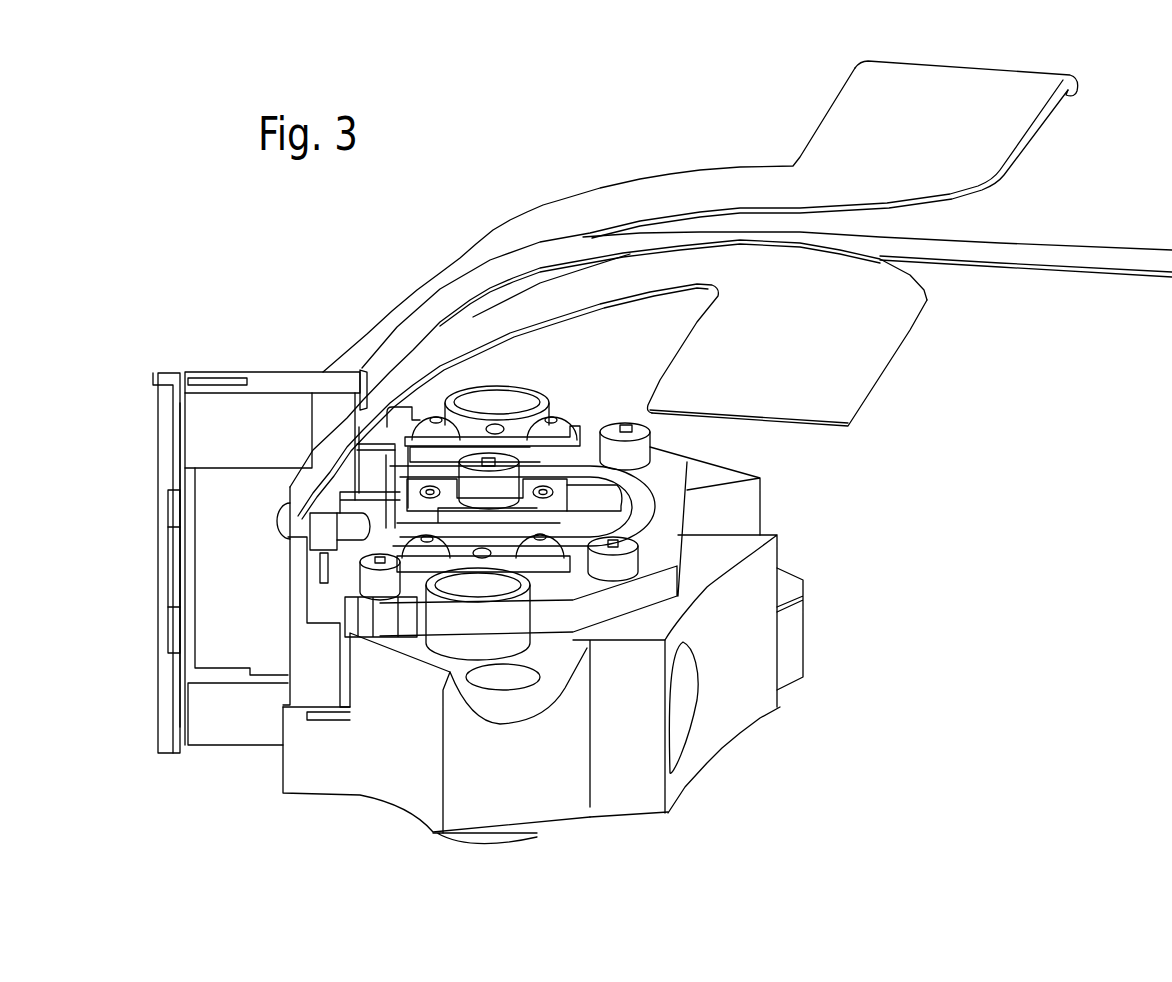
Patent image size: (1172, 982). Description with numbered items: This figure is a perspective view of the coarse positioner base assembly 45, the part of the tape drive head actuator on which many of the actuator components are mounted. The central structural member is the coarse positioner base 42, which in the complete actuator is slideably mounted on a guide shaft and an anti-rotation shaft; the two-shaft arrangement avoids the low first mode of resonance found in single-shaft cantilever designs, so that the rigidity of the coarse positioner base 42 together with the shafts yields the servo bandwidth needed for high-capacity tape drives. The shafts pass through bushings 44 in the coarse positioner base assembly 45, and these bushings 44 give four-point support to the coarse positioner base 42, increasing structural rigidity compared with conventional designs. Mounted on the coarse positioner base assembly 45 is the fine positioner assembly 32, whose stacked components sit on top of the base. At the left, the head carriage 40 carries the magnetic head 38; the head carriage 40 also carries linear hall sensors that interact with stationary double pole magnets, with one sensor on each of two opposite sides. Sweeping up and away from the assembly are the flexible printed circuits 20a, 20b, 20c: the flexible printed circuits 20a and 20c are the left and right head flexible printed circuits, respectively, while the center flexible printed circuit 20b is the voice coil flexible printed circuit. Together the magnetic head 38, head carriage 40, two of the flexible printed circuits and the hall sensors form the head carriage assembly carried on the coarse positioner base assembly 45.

The left head flexible printed circuit 20a is at (917, 75).
The voice coil flexible printed circuit 20b is at (1035, 248).
The right head flexible printed circuit 20c is at (843, 423).
The fine positioner assembly 32 is at (668, 529).
The magnetic head 38 is at (172, 755).
The head carriage 40 is at (237, 752).
The coarse positioner base 42 is at (387, 803).
The bushings 44 is at (500, 843).
The coarse positioner base assembly 45 is at (301, 253).